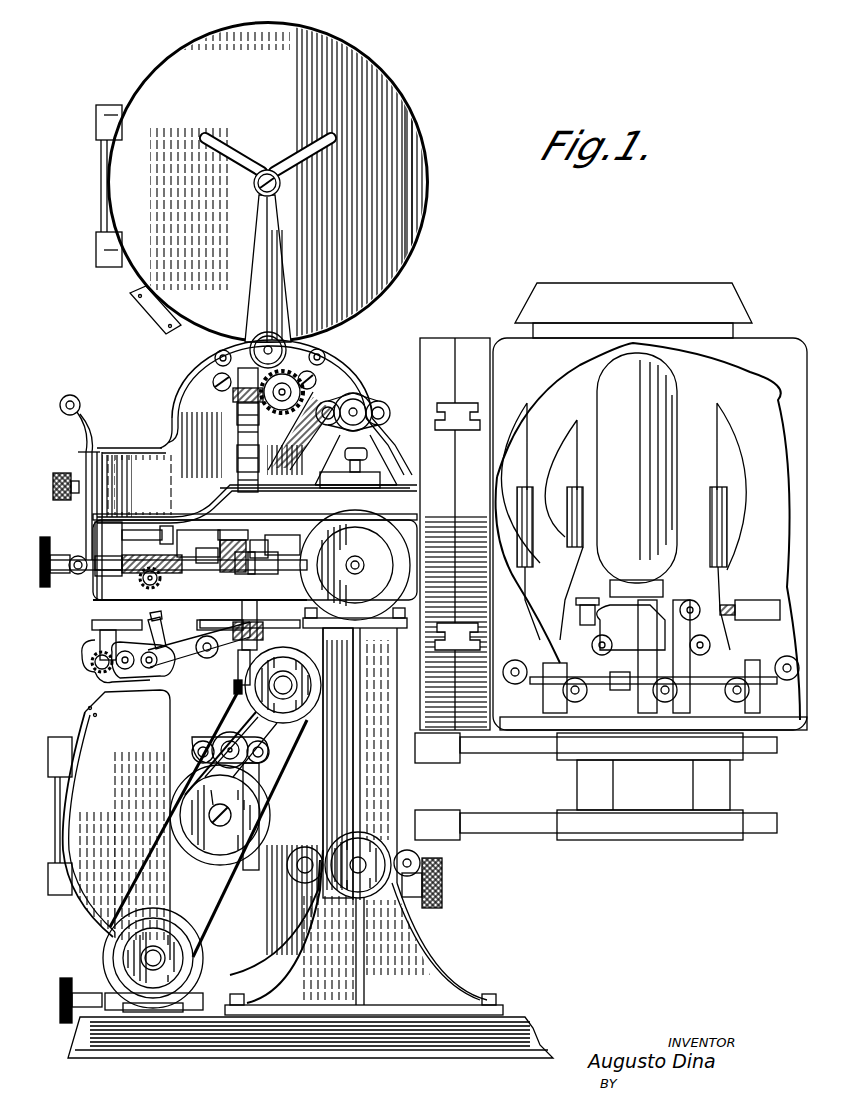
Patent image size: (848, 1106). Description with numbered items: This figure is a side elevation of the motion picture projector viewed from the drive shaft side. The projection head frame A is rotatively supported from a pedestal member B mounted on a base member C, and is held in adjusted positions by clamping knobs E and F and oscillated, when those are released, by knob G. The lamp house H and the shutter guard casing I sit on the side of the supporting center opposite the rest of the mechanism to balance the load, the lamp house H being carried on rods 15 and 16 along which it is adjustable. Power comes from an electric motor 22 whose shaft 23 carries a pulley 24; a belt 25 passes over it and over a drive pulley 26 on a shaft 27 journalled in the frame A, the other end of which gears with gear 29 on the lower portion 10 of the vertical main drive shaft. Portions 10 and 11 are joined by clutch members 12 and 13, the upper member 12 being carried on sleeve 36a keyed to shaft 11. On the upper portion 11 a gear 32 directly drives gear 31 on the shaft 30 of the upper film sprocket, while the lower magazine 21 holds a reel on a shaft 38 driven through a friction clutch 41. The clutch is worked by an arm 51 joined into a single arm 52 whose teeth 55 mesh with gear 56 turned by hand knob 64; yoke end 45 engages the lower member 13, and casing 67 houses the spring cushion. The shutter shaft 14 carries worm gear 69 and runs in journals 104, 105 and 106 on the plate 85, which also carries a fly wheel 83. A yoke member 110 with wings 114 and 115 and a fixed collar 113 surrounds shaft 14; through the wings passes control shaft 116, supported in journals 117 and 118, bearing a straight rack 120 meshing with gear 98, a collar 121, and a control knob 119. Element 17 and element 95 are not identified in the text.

The film reel 17 is at (263, 184).
The gear 32 is at (240, 393).
The shaft 30 is at (305, 382).
The gear 31 is at (276, 415).
The upper portion of main drive shaft 11 is at (236, 472).
The plate 85 is at (283, 495).
The journal 106 is at (126, 486).
The fixed collar 113 is at (110, 540).
The wing 114 is at (142, 528).
The worm gear 69 is at (172, 530).
The yoke member 110 is at (183, 560).
The shutter shaft 14 is at (283, 528).
The journal 105 is at (318, 512).
The journal 104 is at (355, 565).
The journal 117 is at (370, 560).
The fly wheel 83 is at (355, 572).
The control knob 119 is at (70, 498).
The journal 118 is at (90, 580).
The straight rack 120 is at (177, 578).
The gear 98 is at (161, 585).
The collar 121 is at (180, 578).
The wing 115 is at (260, 580).
The control shaft 116 is at (259, 574).
The bar 95 is at (117, 630).
The casing 67 is at (168, 623).
The clutch member 12 is at (235, 617).
The sleeve 36a is at (303, 613).
The hand knob 64 is at (95, 650).
The arm 52 is at (143, 653).
The gear 56 is at (92, 665).
The teeth 55 is at (98, 680).
The arm 51 is at (195, 662).
The yoke end 45 is at (223, 660).
The gear 29 is at (234, 688).
The clutch member 13 is at (295, 665).
The drive pulley 26 is at (325, 680).
The shaft 27 is at (355, 700).
The lower magazine 21 is at (109, 825).
The shaft 38 is at (220, 815).
The friction clutch 41 is at (185, 815).
The belt 25 is at (150, 875).
The pulley 24 is at (160, 928).
The electric motor 22 is at (108, 942).
The shaft 23 is at (165, 956).
The lower portion of main drive shaft 10 is at (255, 865).
The rod 15 is at (505, 762).
The rod 16 is at (550, 843).
The projection head frame A is at (120, 450).
The clamping knob E is at (368, 397).
The shutter guard casing I is at (437, 348).
The lamp house H is at (780, 345).
The knob G is at (443, 883).
The clamping knob F is at (342, 898).
The pedestal member B is at (388, 950).
The base member C is at (530, 1030).